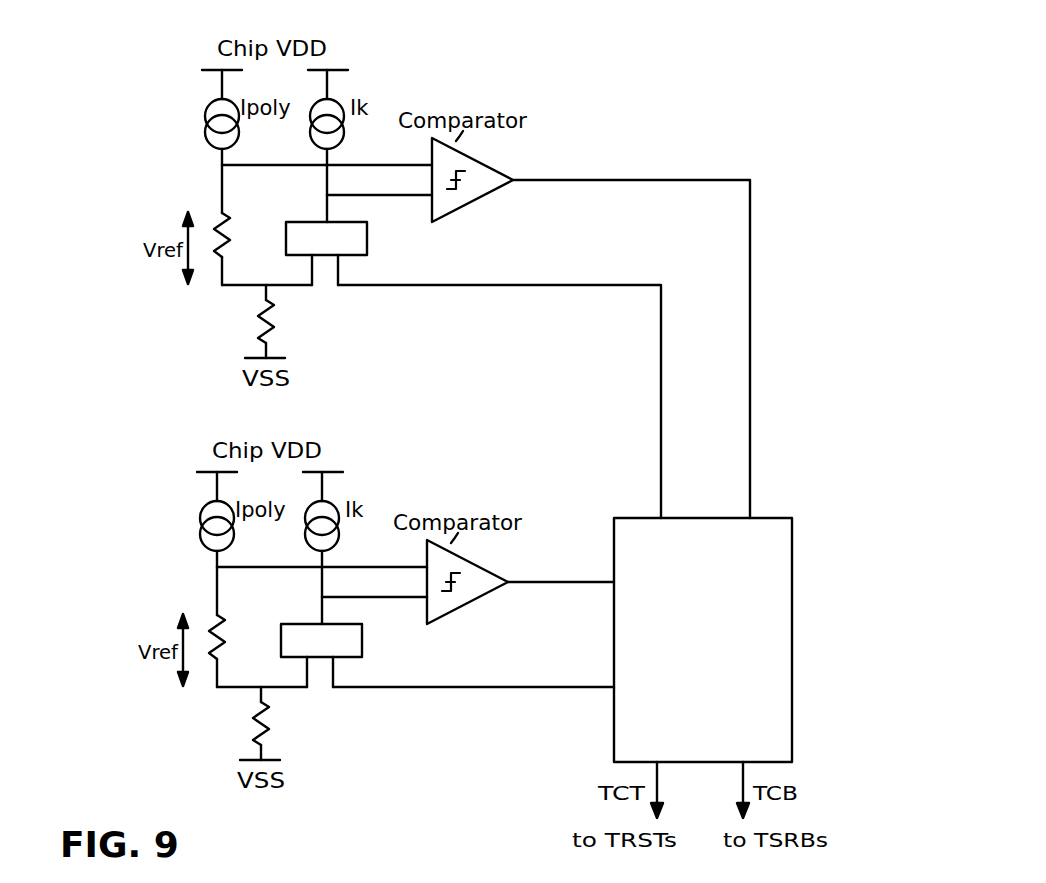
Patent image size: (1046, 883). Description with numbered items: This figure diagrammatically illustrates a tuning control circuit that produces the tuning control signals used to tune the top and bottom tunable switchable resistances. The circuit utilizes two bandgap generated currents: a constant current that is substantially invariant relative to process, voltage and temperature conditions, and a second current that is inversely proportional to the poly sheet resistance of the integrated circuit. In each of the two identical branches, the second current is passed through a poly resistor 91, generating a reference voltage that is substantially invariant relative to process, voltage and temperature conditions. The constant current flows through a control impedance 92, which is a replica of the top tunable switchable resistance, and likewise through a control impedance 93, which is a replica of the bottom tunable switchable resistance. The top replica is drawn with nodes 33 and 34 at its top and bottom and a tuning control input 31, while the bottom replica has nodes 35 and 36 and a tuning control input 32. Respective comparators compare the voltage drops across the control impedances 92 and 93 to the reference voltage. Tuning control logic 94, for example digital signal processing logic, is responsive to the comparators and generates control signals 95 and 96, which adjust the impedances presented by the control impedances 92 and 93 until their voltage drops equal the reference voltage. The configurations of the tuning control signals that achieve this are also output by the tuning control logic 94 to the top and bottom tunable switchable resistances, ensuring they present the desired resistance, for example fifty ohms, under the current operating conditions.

The tuning control input 31 is at (339, 279).
The tuning control input 32 is at (358, 672).
The top node of TSRT string 33 is at (326, 217).
The bottom node of TSRT string 34 is at (310, 277).
The top node of TSRB string 35 is at (297, 610).
The bottom node of TSRB string 36 is at (281, 672).
The poly resistor 91 is at (238, 207).
The control impedance 92 is at (368, 241).
The control impedance 93 is at (346, 640).
The tuning control logic 94 is at (793, 657).
The control signal 95 is at (660, 372).
The control signal 96 is at (473, 711).